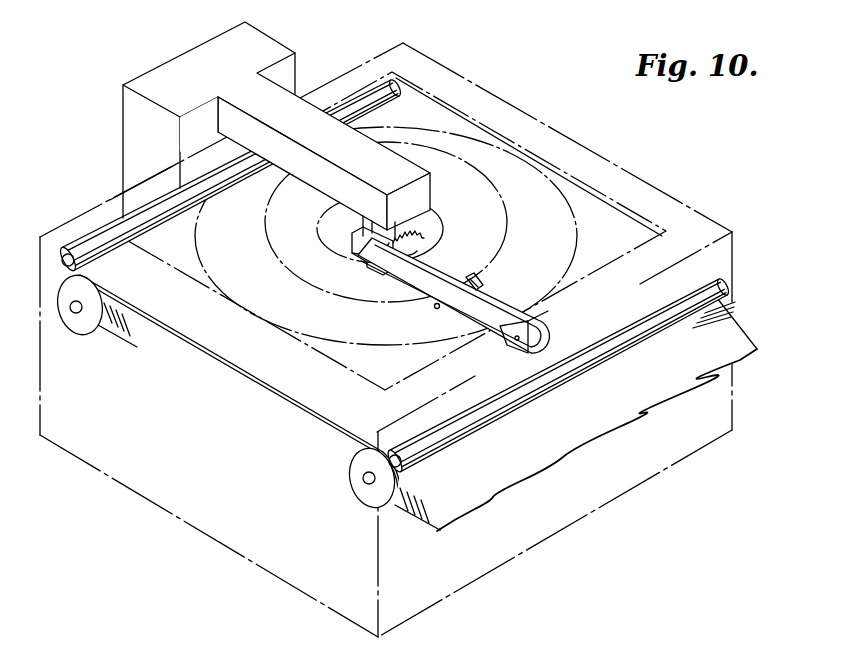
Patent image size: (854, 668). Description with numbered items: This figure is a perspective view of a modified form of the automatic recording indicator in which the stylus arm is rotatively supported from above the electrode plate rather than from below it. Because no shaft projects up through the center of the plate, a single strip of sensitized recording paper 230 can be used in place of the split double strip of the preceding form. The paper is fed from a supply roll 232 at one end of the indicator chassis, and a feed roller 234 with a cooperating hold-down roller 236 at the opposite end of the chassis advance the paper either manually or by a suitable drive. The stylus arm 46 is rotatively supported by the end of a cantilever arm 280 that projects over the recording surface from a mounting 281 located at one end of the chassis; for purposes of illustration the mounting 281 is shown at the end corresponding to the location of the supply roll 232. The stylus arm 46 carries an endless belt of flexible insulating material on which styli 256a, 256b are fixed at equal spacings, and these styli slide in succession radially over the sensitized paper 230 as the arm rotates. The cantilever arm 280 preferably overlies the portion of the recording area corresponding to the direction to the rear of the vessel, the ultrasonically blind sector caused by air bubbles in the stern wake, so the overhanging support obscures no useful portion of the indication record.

The sensitized recording paper strip 230 is at (517, 494).
The paper supply roll 232 is at (106, 331).
The feed roller 234 is at (356, 480).
The hold-down roller 236 is at (594, 340).
The mounting 281 is at (136, 160).
The cantilever arm 280 is at (398, 171).
The stylus arm 46 is at (502, 277).
The stylus 256a is at (438, 310).
The stylus 256b is at (473, 278).